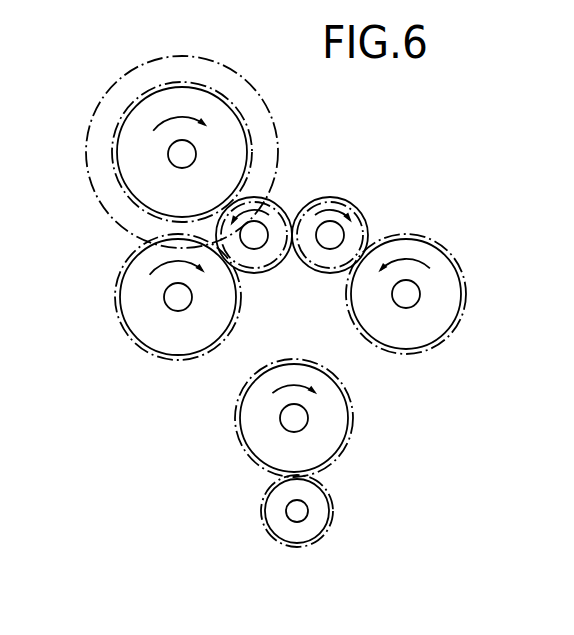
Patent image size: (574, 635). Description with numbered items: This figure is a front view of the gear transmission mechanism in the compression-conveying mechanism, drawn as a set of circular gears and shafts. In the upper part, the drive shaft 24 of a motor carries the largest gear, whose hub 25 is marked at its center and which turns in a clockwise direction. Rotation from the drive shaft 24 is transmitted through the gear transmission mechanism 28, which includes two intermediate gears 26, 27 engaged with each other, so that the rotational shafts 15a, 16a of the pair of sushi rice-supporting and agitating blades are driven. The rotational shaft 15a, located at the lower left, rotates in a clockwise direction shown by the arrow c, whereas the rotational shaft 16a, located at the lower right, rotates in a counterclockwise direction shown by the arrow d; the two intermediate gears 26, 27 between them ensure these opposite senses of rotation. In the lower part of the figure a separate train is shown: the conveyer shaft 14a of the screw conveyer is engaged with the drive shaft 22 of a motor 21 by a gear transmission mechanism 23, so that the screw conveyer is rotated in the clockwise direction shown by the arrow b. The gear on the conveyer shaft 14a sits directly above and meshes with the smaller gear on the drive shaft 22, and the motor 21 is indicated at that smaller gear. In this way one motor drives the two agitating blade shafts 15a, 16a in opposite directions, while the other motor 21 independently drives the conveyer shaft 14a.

The drive shaft of motor 24 is at (90, 111).
The drum shaft 25 is at (181, 157).
The intermediate gear 26 is at (284, 203).
The intermediate gear 27 is at (356, 206).
The gear transmission mechanism 28 is at (442, 236).
The rotational shaft 16a is at (409, 296).
The rotational shaft 15a is at (172, 300).
The gear transmission mechanism 23 is at (249, 464).
The conveyer shaft 14a is at (302, 422).
The drive shaft 22 is at (290, 513).
The motor 21 is at (339, 524).